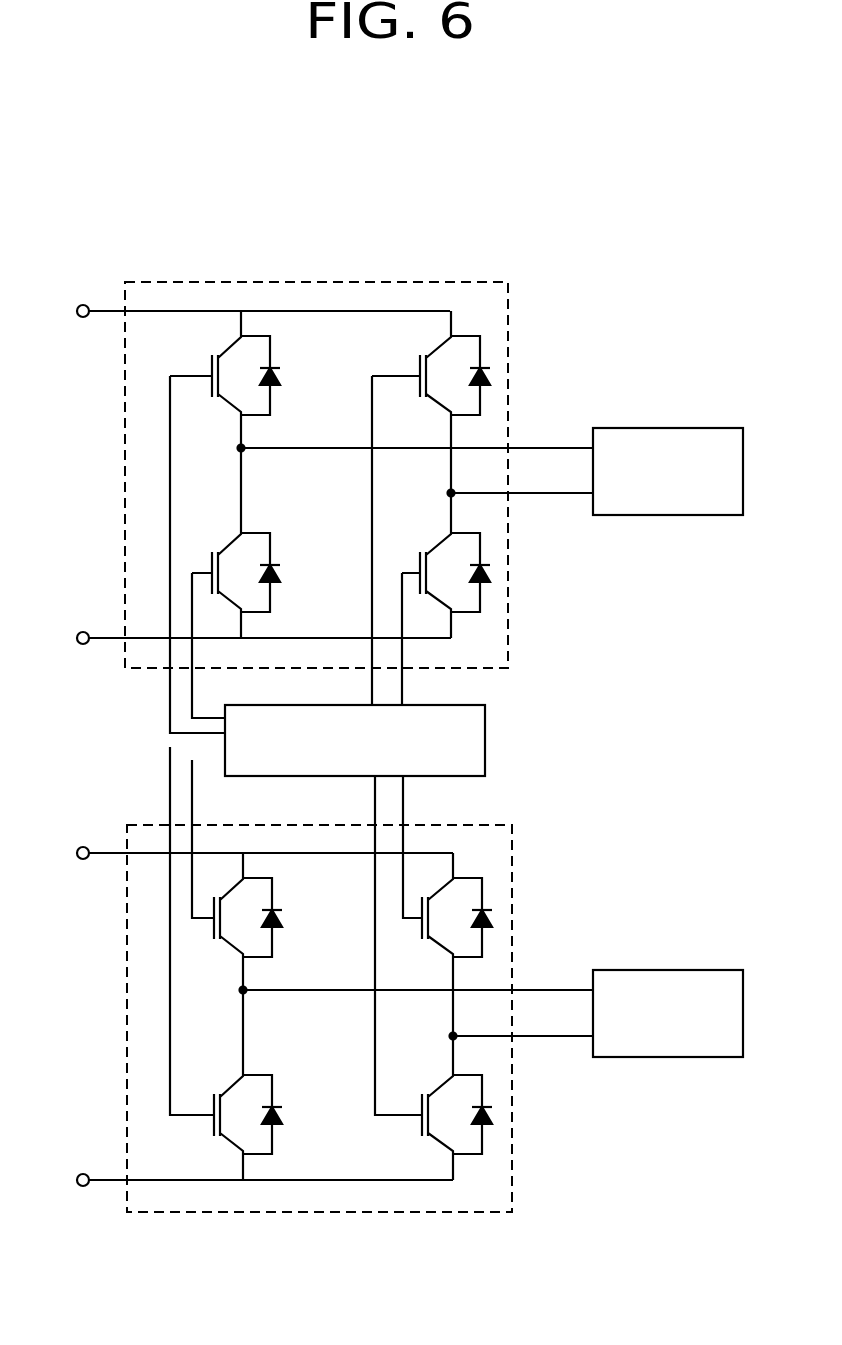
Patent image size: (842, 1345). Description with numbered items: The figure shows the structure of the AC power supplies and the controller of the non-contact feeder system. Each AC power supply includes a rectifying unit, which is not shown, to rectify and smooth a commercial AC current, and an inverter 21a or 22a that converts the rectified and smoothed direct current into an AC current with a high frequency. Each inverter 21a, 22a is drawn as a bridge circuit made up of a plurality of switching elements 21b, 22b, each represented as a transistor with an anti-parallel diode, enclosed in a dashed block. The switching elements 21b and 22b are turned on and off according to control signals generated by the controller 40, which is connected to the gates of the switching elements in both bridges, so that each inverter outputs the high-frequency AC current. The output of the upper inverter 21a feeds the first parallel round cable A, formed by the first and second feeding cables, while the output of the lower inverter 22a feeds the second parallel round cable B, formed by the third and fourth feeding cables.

The inverter 21a is at (315, 282).
The switching elements 21b is at (213, 352).
The inverter 22a is at (322, 1213).
The switching elements 22b is at (467, 863).
The controller 40 is at (486, 740).
The first parallel round cable A is at (665, 428).
The second parallel round cable B is at (665, 970).